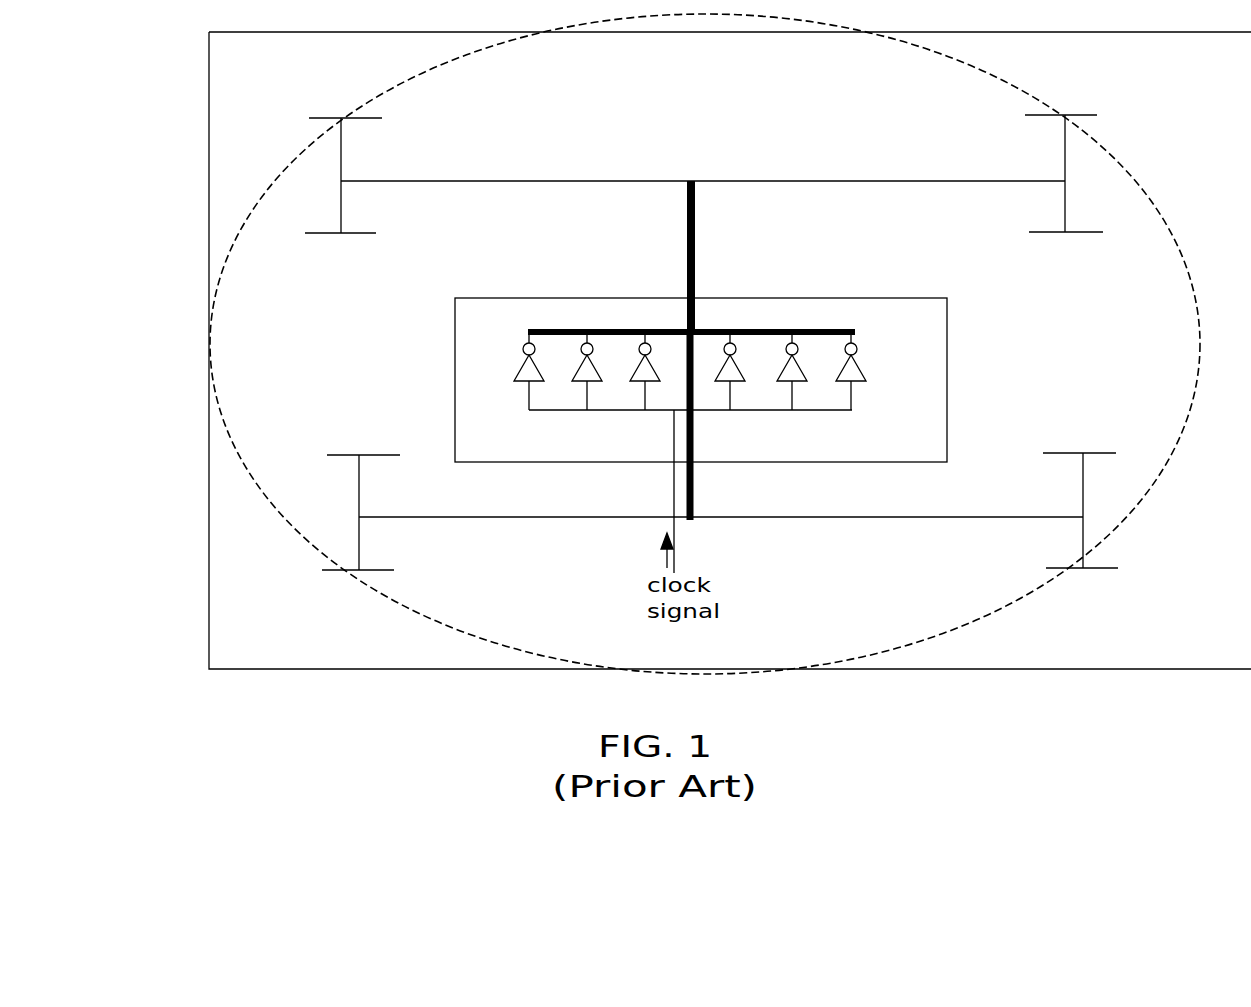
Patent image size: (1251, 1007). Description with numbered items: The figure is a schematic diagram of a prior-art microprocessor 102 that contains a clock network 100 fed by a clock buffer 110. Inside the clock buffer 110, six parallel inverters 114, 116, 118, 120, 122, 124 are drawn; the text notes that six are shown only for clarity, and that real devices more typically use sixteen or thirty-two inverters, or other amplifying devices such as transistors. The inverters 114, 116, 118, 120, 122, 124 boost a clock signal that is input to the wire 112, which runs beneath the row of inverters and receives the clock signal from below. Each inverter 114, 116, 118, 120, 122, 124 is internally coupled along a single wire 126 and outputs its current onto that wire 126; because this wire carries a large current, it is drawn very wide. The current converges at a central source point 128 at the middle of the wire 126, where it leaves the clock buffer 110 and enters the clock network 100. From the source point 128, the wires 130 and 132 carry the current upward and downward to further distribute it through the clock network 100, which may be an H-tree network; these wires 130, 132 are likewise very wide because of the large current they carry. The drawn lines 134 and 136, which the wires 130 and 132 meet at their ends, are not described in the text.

The clock network 100 is at (236, 181).
The microprocessor 102 is at (1240, 660).
The clock buffer 110 is at (931, 338).
The wire 112 is at (662, 412).
The inverter 114 is at (527, 373).
The inverter 116 is at (582, 377).
The inverter 118 is at (640, 376).
The inverter 120 is at (737, 380).
The inverter 122 is at (800, 379).
The inverter 124 is at (860, 382).
The wire 126 is at (772, 328).
The central source point 128 is at (696, 329).
The wire 130 is at (695, 241).
The wire 132 is at (695, 497).
The upper horizontal clock line 134 is at (838, 181).
The lower horizontal clock line 136 is at (893, 517).